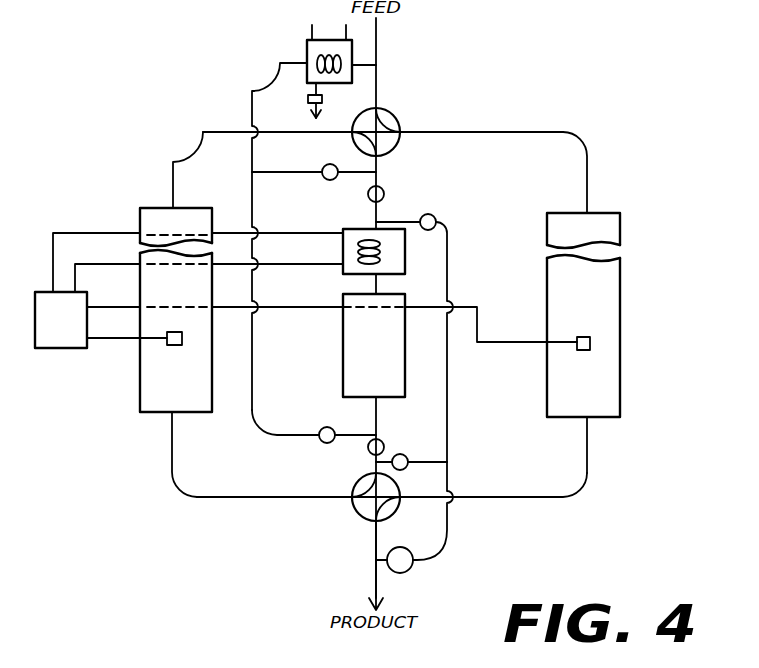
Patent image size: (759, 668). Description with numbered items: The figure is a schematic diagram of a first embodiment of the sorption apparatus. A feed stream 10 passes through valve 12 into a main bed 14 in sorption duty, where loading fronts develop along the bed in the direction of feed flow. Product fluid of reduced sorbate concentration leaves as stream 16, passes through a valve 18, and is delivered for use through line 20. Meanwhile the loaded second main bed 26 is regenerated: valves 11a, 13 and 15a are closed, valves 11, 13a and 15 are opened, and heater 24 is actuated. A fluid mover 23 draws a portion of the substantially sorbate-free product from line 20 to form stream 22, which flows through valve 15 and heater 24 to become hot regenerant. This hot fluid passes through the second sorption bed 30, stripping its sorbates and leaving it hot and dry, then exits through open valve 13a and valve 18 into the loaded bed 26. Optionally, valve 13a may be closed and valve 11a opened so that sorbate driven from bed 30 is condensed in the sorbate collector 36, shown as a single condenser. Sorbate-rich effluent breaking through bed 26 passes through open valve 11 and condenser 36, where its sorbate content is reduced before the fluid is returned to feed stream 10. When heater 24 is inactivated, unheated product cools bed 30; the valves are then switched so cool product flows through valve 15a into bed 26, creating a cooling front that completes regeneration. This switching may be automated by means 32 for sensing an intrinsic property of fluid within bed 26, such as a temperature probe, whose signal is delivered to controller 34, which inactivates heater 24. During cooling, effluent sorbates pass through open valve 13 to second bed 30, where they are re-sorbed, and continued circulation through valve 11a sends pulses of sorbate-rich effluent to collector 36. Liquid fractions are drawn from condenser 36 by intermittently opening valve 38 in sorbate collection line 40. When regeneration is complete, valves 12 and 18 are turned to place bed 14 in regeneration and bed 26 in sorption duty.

The feed stream 10 is at (378, 50).
The valve 11 is at (332, 164).
The valve 11a is at (328, 427).
The valve 12 is at (394, 114).
The valve 13 is at (383, 191).
The valve 13a is at (381, 441).
The main bed 14 is at (621, 334).
The valve 15 is at (434, 216).
The valve 15a is at (403, 470).
The stream 16 is at (537, 497).
The valve 18 is at (356, 515).
The line 20 is at (376, 579).
The stream 22 is at (447, 520).
The fluid mover 23 is at (410, 568).
The heater 24 is at (350, 276).
The second main bed 26 is at (137, 375).
The second sorption bed 30 is at (343, 360).
The means for sensing an intrinsic property of fluid 32 is at (170, 346).
The controller 34 is at (72, 326).
The sorbate collector 36 is at (307, 50).
The valve 38 is at (308, 99).
The sorbate collection line 40 is at (321, 102).